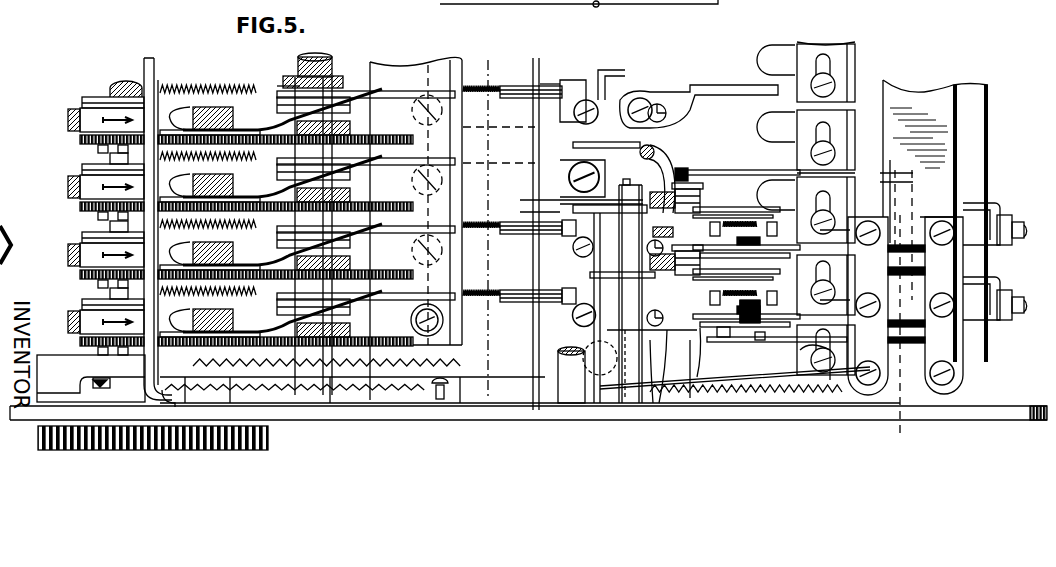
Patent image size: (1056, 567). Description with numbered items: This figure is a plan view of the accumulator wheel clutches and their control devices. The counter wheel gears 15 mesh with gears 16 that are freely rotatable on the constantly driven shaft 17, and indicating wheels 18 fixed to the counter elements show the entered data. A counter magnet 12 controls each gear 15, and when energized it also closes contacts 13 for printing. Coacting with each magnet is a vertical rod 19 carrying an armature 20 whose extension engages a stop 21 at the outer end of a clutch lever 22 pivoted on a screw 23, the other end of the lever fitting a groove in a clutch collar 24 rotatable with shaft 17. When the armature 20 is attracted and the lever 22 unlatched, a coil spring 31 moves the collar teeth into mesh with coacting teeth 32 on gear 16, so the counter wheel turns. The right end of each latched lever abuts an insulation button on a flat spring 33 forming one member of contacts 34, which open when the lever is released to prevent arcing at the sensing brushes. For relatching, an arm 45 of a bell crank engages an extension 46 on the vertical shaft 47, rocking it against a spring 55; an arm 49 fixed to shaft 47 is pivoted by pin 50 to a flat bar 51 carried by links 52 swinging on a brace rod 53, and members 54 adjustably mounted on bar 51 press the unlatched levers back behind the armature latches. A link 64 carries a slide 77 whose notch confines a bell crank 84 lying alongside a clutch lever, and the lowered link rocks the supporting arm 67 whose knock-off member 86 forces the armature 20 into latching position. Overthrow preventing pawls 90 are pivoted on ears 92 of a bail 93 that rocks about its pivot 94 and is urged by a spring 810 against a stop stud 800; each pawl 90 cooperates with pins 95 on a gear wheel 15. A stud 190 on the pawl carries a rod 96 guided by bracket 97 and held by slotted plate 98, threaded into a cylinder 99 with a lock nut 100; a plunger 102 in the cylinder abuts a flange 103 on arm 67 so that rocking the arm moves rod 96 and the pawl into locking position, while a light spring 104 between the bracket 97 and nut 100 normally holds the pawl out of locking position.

The bail 93 is at (155, 62).
The indicating wheels 18 is at (68, 116).
The stud 190 is at (200, 88).
The coacting teeth 32 is at (270, 110).
The clutch collar 24 is at (278, 90).
The counter wheel gears 15 is at (82, 205).
The pins 95 is at (98, 151).
The coil spring 31 is at (300, 182).
The gears 16 is at (300, 250).
The ears 92 is at (183, 331).
The shaft 17 is at (332, 62).
The rod 96 is at (386, 90).
The screw 23 is at (423, 72).
The bracket 97 is at (463, 143).
The slotted plate 98 is at (463, 183).
The light spring 104 is at (490, 88).
The lock nut 100 is at (526, 85).
The cylinder 99 is at (552, 86).
The plunger 102 is at (601, 86).
The clutch lever 22 is at (682, 100).
The vertical rod 19 is at (655, 148).
The armature 20 is at (680, 163).
The slide 77 is at (542, 234).
The link 64 is at (602, 182).
The extending flange 103 is at (536, 212).
The extension 46 is at (536, 243).
The arm 45 is at (536, 330).
The bell crank 84 is at (678, 402).
The stop 21 is at (653, 405).
The vertical shaft 47 is at (572, 412).
The link supporting arm 67 is at (727, 205).
The armature knock-off member 86 is at (733, 212).
The counter magnet 12 is at (767, 256).
The members 54 is at (769, 52).
The flat bar 51 is at (848, 42).
The flat spring 33 is at (813, 313).
The links 52 is at (913, 315).
The brace rod 53 is at (950, 125).
The pivot center 94 is at (105, 388).
The stop stud 800 is at (188, 425).
The overthrow preventing pawls 90 is at (262, 405).
The spring 810 is at (280, 405).
The spring 55 is at (790, 394).
The contacts 13 is at (772, 400).
The arm 49 is at (737, 367).
The contacts 34 is at (703, 380).
The pin 50 is at (823, 358).